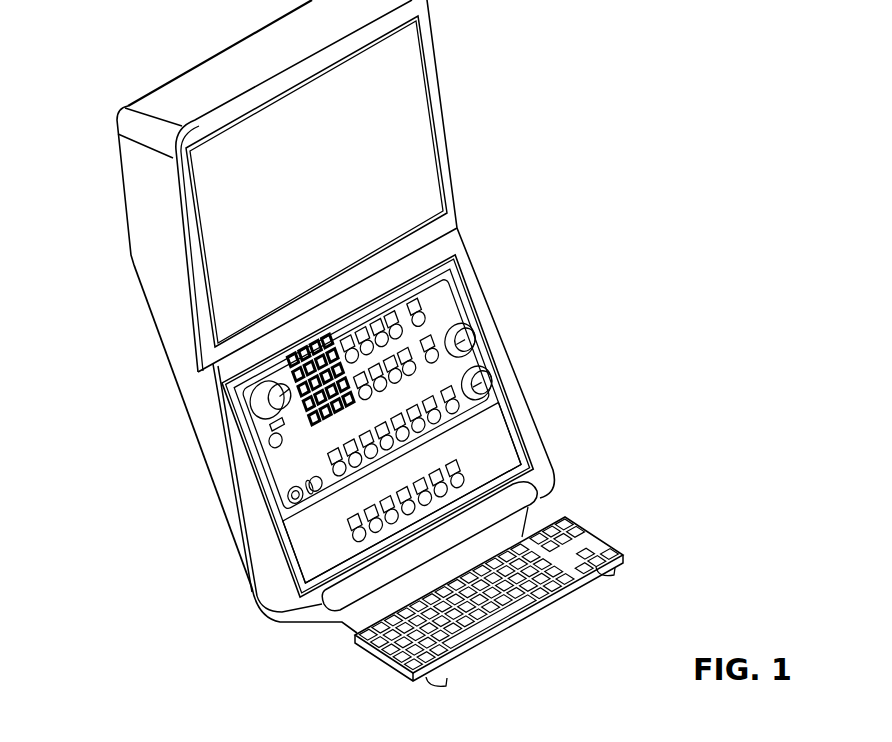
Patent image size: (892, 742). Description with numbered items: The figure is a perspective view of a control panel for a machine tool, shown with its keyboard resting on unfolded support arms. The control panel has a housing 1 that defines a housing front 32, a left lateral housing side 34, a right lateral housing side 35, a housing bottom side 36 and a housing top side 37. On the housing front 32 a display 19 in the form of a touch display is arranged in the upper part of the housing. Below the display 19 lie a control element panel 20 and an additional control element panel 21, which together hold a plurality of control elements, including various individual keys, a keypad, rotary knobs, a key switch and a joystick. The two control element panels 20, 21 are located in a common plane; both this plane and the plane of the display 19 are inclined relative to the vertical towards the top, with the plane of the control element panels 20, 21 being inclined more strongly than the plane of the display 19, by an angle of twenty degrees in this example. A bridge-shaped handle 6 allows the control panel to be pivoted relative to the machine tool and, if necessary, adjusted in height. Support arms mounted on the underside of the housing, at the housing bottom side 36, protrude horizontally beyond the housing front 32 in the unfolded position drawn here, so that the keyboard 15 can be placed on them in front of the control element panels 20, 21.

The housing 1 is at (463, 106).
The housing top side 37 is at (234, 61).
The housing front 32 is at (460, 136).
The display 19 is at (420, 161).
The left lateral housing side 34 is at (136, 313).
The right lateral housing side 35 is at (480, 243).
The control element panel 20 is at (449, 302).
The additional control element panel 21 is at (504, 450).
The housing bottom side 36 is at (297, 638).
The bridge-shaped handle 6 is at (522, 499).
The keyboard 15 is at (565, 522).